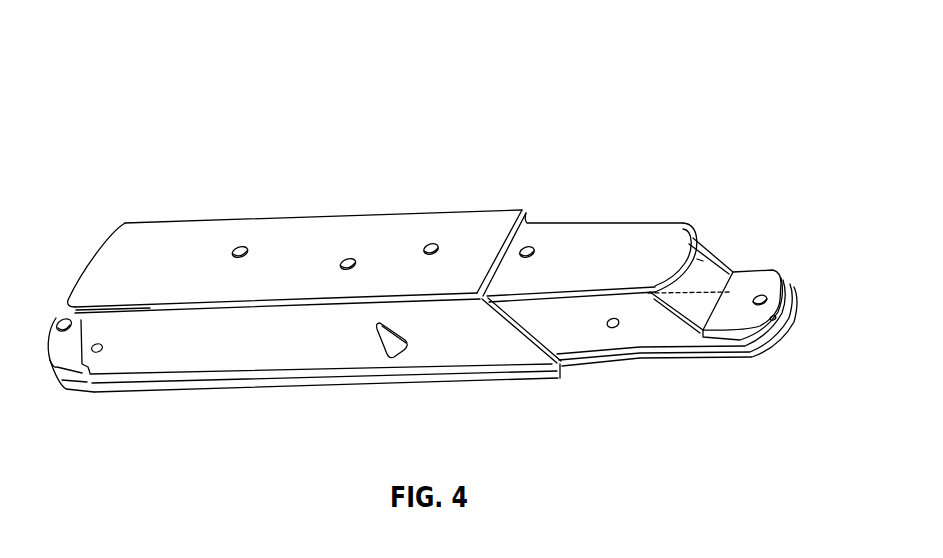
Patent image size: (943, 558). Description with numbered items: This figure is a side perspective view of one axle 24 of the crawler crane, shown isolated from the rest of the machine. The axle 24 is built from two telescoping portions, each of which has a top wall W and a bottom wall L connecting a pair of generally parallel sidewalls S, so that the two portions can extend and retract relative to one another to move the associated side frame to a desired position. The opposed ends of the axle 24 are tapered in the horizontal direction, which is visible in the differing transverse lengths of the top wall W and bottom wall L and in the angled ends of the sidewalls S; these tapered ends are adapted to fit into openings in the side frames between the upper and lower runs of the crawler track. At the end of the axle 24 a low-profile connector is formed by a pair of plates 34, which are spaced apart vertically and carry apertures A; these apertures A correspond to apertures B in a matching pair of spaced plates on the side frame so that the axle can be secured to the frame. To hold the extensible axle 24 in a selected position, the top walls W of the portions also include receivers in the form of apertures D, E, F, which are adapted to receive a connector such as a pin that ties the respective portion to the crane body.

The axle 24 is at (596, 199).
The plates 34 is at (774, 270).
The apertures A is at (761, 293).
The apertures B is at (58, 316).
The apertures D is at (432, 243).
The apertures E is at (349, 258).
The apertures F is at (247, 247).
The top wall W is at (190, 284).
The sidewalls S is at (196, 360).
The bottom wall L is at (665, 416).